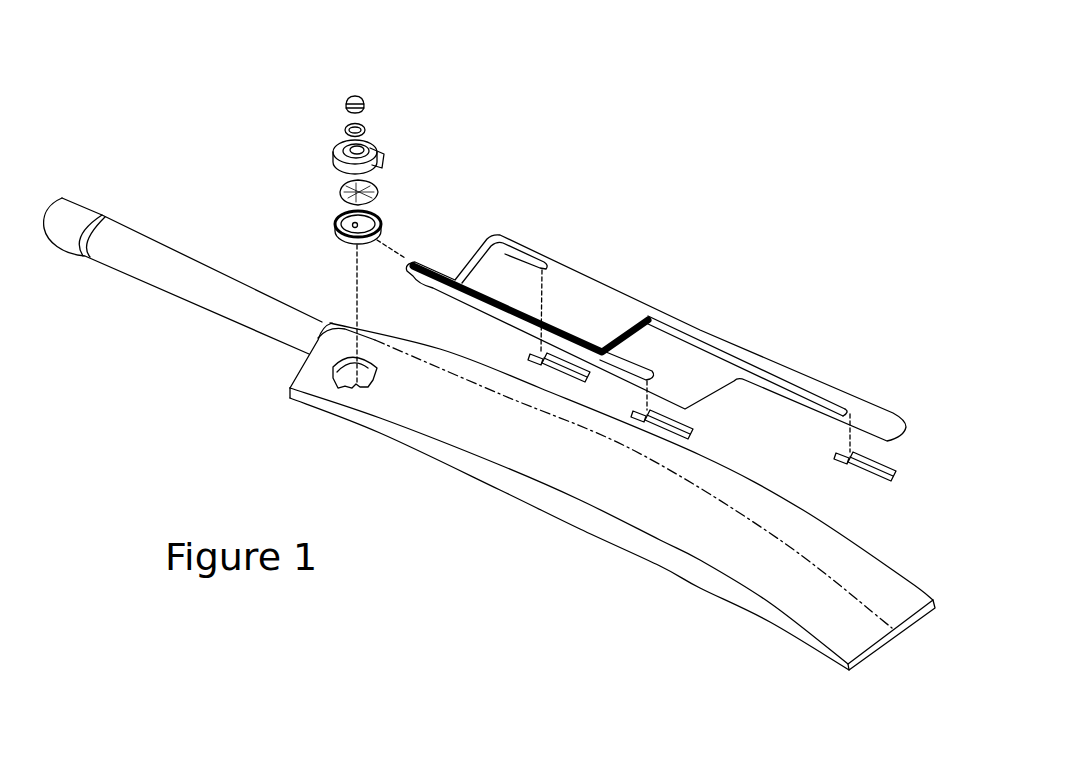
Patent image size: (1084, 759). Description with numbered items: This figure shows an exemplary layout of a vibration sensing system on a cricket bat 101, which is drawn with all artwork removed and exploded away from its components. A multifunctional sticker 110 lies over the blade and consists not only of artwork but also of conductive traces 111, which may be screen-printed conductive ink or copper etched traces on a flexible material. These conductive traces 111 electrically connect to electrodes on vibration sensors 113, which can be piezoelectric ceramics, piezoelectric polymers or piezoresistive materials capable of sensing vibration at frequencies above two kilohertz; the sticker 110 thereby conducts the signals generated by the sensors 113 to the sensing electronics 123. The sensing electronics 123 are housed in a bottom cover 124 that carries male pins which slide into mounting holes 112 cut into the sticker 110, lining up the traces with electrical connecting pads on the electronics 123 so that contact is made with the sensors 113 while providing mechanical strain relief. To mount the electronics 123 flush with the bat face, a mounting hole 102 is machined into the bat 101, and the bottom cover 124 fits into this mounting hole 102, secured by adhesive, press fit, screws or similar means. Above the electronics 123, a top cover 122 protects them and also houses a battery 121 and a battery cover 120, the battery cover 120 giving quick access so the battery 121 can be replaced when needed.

The bat 101 is at (217, 277).
The mounting hole 102 is at (342, 390).
The multifunctional sticker 110 is at (633, 295).
The conductive traces 111 is at (855, 408).
The mounting holes 112 is at (428, 258).
The vibration sensors 113 is at (888, 462).
The battery cover 120 is at (355, 97).
The battery 121 is at (347, 125).
The top cover 122 is at (382, 155).
The sensing electronics 123 is at (375, 192).
The bottom cover 124 is at (380, 220).